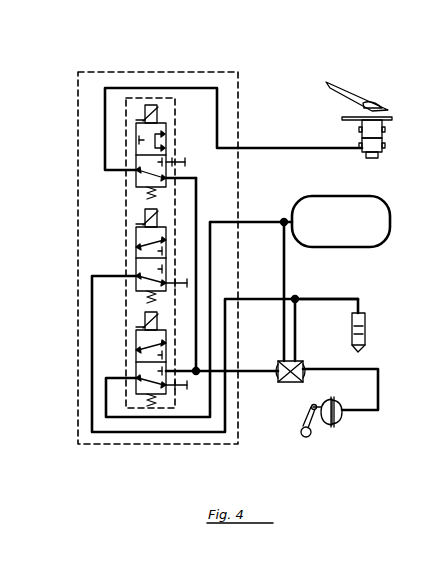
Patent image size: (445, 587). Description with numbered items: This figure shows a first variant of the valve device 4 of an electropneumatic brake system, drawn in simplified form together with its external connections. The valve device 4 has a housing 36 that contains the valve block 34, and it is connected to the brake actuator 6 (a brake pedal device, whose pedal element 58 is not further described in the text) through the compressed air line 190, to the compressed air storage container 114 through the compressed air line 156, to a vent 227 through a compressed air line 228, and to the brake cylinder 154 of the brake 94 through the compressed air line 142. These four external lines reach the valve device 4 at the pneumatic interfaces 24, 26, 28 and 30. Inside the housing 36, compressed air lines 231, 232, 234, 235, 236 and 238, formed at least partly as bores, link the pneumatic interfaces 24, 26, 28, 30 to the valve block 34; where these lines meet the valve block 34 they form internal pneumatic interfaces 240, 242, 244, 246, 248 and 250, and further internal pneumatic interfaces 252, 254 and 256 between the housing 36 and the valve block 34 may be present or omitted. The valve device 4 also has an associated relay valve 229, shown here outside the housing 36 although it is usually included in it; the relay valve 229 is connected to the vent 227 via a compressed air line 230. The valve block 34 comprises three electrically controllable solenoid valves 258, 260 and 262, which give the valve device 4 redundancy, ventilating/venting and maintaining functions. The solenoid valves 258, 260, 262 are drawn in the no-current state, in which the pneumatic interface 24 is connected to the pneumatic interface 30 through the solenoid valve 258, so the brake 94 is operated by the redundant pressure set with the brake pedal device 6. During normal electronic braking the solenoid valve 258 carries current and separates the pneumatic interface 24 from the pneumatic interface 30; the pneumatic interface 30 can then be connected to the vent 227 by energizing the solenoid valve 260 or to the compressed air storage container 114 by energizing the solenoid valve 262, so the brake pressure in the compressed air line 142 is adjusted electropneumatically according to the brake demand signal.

The valve device 4 is at (204, 72).
The valve block 34 is at (163, 98).
The housing 36 is at (112, 233).
The compressed air line 231 is at (105, 114).
The solenoid valve 258 is at (136, 150).
The internal pneumatic interface 240 is at (126, 175).
The internal pneumatic interface 256 is at (178, 164).
The pneumatic interface 24 is at (238, 148).
The compressed air line 190 is at (290, 147).
The foot brake valve 58 is at (368, 98).
The brake actuator 6 is at (398, 104).
The internal pneumatic interface 250 is at (186, 178).
The compressed air line 238 is at (196, 213).
The pneumatic interface 26 is at (238, 222).
The compressed air line 156 is at (283, 221).
The solenoid valve 260 is at (136, 253).
The internal pneumatic interface 248 is at (178, 266).
The internal pneumatic interface 242 is at (126, 278).
The compressed air line 236 is at (200, 284).
The internal pneumatic interface 254 is at (197, 284).
The compressed air line 228 is at (337, 298).
The compressed air line 234 is at (92, 318).
The pneumatic interface 28 is at (240, 300).
The vent 227 is at (365, 330).
The solenoid valve 262 is at (136, 352).
The compressed air line 230 is at (296, 333).
The internal pneumatic interface 246 is at (178, 368).
The compressed air line 142 is at (330, 368).
The internal pneumatic interface 244 is at (126, 380).
The pneumatic interface 30 is at (241, 371).
The compressed air line 235 is at (190, 373).
The internal pneumatic interface 252 is at (178, 388).
The compressed air line 232 is at (106, 416).
The relay valve 229 is at (283, 383).
The brake cylinder 154 is at (333, 428).
The brake 94 is at (357, 424).
The compressed air storage container 114 is at (352, 230).